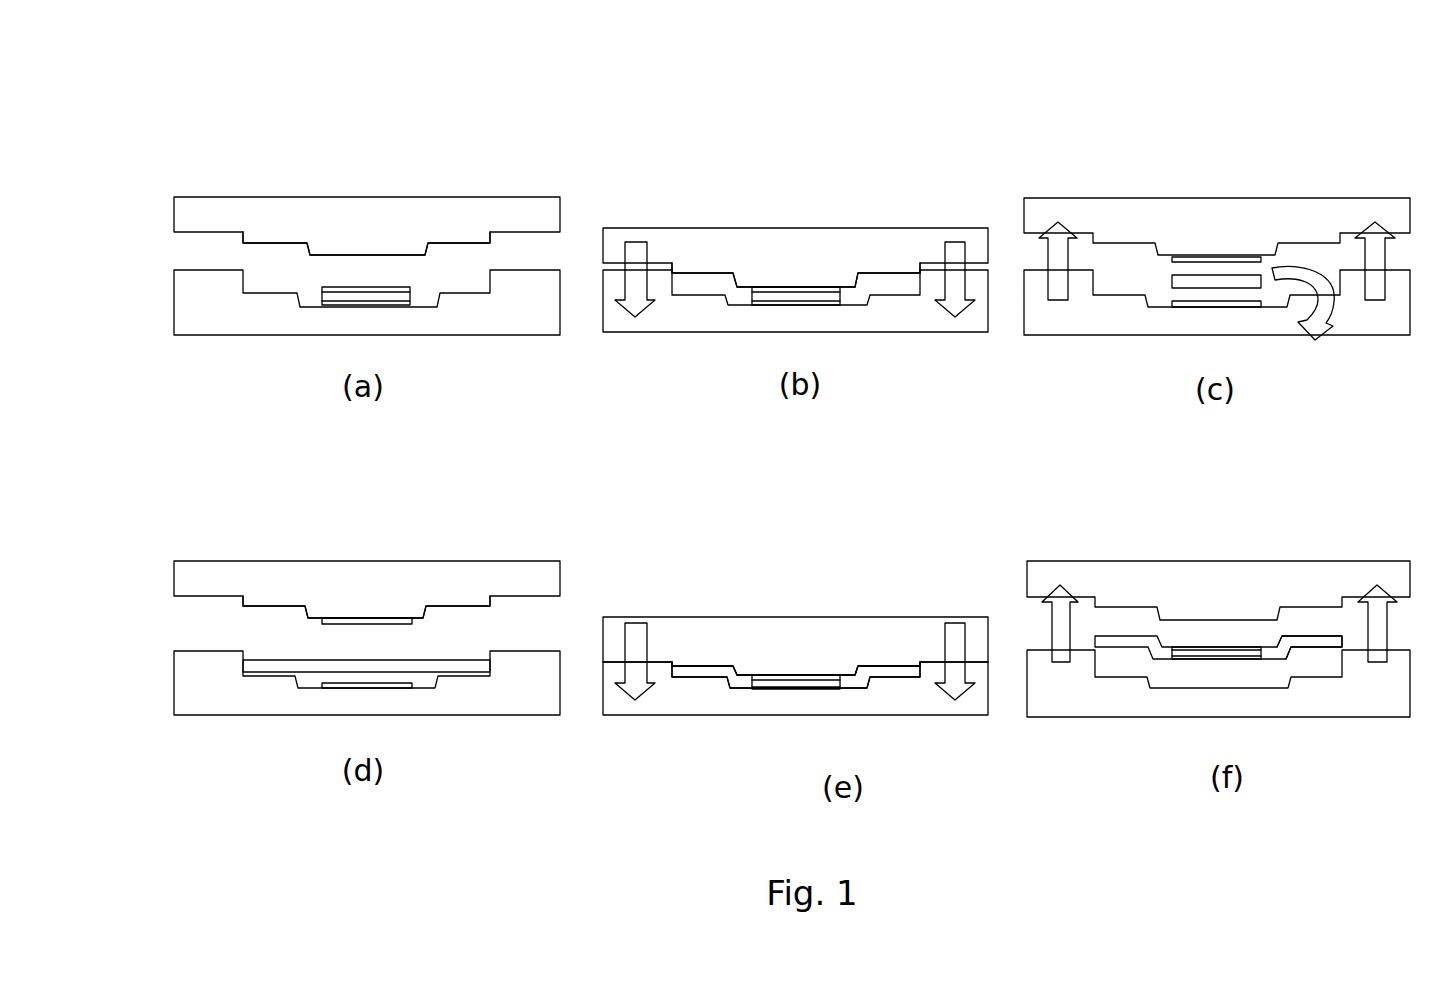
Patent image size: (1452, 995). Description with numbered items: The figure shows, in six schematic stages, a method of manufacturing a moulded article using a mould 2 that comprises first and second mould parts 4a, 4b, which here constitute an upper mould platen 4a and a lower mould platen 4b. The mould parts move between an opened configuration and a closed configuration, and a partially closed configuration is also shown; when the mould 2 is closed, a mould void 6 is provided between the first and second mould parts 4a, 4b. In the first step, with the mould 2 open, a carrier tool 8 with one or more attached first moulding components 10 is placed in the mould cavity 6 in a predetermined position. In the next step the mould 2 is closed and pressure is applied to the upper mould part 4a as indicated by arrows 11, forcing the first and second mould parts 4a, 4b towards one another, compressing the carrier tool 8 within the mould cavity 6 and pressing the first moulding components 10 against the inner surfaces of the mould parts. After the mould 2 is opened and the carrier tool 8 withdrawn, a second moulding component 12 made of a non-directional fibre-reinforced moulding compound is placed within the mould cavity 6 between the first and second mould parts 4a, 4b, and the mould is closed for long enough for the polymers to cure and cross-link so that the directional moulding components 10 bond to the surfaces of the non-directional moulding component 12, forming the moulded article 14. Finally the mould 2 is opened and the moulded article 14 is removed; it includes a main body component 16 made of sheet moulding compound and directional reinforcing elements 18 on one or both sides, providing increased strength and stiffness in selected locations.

The mould 2 is at (513, 175).
The upper mould platen 4a is at (405, 220).
The lower mould platen 4b is at (463, 320).
The mould void 6 is at (257, 253).
The carrier tool 8 is at (412, 293).
The first moulding components 10 is at (323, 297).
The arrows 11 is at (633, 257).
The second moulding component 12 is at (457, 665).
The moulded article 14 is at (1162, 650).
The main body component 16 is at (1277, 653).
The directional reinforcing elements 18 is at (1245, 647).